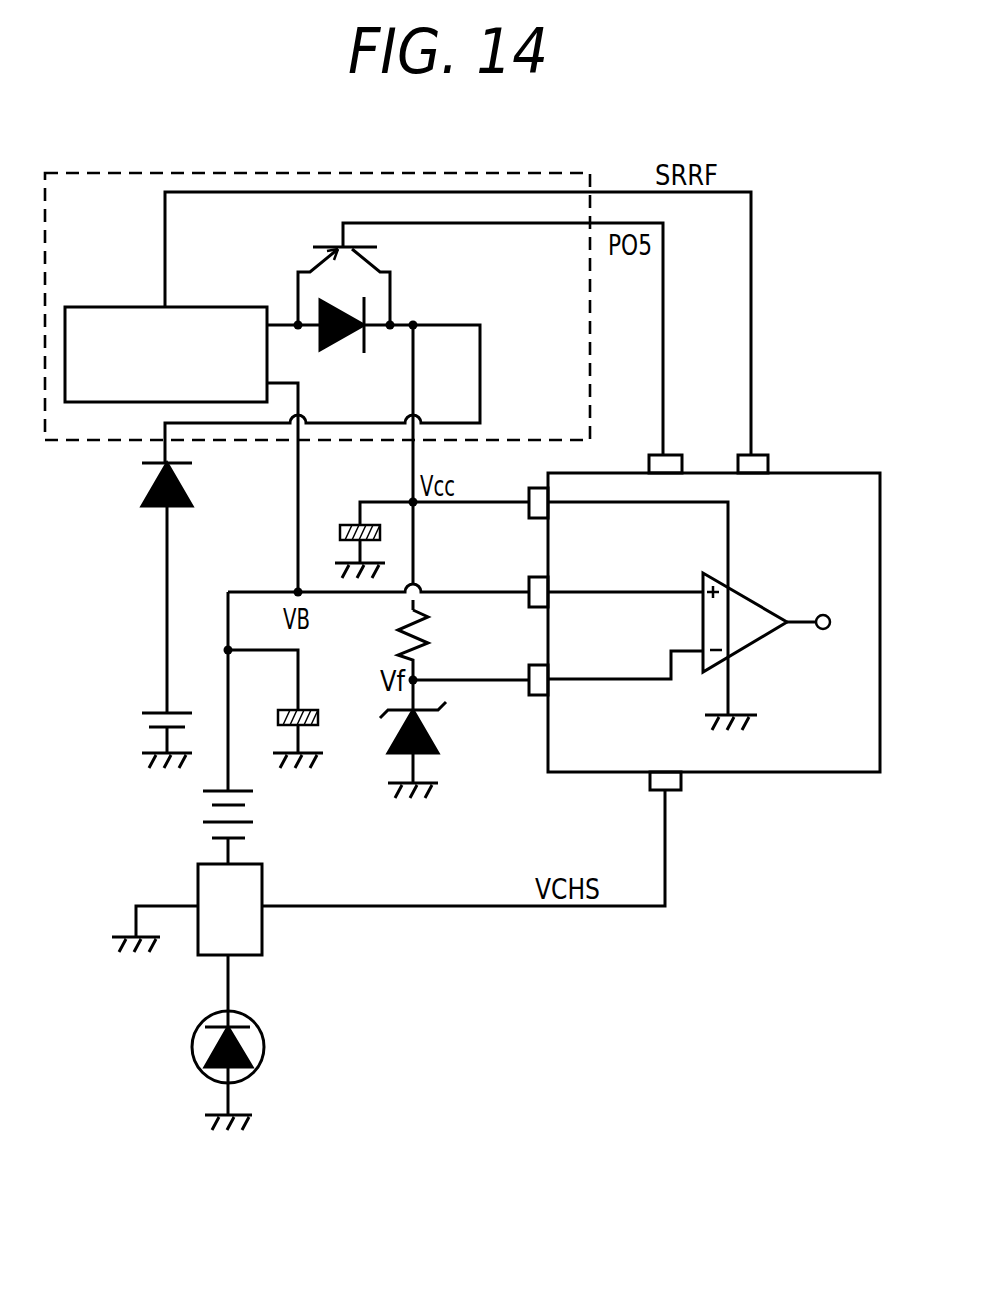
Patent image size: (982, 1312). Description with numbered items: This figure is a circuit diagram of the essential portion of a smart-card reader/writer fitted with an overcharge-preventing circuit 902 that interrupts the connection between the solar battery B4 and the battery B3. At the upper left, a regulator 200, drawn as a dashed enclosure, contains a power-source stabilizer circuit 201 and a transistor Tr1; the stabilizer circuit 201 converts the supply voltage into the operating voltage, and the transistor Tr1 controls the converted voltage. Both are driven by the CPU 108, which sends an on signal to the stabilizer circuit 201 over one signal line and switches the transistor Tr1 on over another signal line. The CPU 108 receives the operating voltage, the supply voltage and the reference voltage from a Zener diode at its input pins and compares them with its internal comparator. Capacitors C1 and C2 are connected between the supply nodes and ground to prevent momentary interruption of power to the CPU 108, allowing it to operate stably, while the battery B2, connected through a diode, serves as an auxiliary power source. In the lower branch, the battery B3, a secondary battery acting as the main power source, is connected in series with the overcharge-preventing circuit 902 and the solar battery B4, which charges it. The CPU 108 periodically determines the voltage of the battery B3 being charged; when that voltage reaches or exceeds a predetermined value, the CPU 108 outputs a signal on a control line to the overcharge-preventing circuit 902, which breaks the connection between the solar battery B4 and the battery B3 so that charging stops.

The regulator 200 is at (162, 174).
The power-source stabilizer circuit 201 is at (127, 307).
The CPU 108 is at (824, 472).
The overcharge-preventing circuit 902 is at (263, 931).
The transistor Tr1 is at (344, 267).
The capacitor C1 is at (268, 710).
The capacitor C2 is at (338, 531).
The battery B2 is at (163, 712).
The battery B3 is at (257, 812).
The solar battery B4 is at (264, 1030).